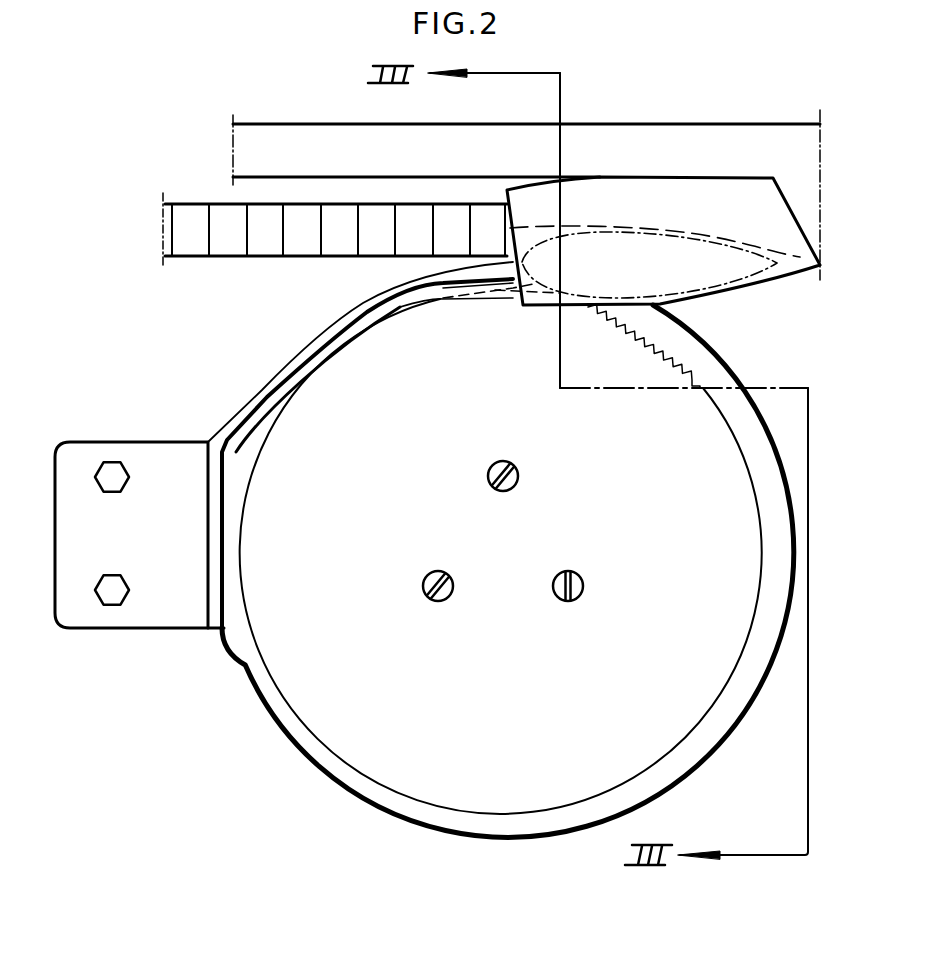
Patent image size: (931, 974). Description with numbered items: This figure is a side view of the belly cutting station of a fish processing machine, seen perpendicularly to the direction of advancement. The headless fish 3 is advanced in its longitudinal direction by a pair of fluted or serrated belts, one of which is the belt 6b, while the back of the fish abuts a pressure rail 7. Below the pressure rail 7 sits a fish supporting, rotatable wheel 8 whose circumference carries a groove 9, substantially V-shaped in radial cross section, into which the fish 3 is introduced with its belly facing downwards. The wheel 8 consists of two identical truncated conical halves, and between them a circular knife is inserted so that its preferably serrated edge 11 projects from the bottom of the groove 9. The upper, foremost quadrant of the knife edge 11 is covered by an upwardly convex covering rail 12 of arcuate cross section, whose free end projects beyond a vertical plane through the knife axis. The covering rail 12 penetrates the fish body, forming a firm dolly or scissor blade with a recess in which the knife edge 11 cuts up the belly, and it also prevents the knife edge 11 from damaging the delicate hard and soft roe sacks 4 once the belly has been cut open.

The fish 3 is at (623, 195).
The roe sacks 4 is at (690, 248).
The belt 6b is at (182, 250).
The pressure rail 7 is at (245, 162).
The rotatable wheel 8 is at (728, 366).
The groove 9 is at (752, 434).
The serrated knife edge 11 is at (693, 372).
The covering rail 12 is at (260, 392).